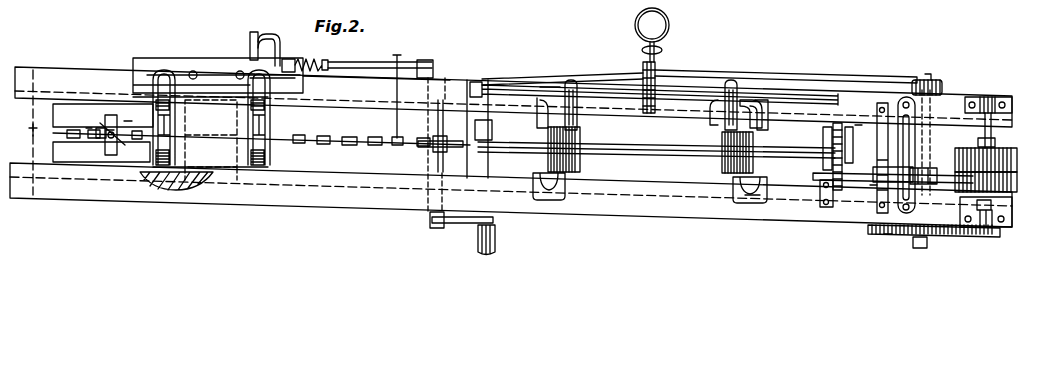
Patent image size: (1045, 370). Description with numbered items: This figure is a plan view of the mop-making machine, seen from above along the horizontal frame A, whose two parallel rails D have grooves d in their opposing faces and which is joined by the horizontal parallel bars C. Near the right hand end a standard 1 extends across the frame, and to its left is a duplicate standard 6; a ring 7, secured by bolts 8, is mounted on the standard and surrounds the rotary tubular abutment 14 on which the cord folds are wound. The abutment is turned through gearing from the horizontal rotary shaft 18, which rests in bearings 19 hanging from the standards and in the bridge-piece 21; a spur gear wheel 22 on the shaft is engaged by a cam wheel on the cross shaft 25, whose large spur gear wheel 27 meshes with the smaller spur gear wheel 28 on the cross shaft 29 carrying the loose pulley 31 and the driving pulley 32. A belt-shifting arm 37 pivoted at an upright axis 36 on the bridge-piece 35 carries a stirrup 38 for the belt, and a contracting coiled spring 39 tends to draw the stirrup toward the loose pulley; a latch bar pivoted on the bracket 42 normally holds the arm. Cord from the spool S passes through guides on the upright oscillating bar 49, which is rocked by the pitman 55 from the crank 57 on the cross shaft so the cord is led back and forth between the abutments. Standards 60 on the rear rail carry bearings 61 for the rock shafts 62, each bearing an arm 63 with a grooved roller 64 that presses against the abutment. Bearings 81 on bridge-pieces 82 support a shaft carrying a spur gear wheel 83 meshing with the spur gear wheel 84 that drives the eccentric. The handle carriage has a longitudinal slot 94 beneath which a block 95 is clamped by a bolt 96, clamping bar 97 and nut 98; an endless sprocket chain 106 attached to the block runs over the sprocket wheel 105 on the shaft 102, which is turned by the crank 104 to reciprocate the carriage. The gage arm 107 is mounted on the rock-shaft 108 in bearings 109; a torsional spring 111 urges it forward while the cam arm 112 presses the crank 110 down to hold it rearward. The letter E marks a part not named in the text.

The standard 1 is at (752, 203).
The standard 6 is at (552, 192).
The ring 7 is at (733, 180).
The bolts 8 is at (830, 145).
The rotary tubular abutment 14 is at (578, 162).
The horizontal rotary shaft 18 is at (612, 153).
The bearings 19 is at (542, 143).
The bridge-piece 21 is at (903, 97).
The spur gear wheel 22 is at (957, 127).
The cross shaft 25 is at (930, 185).
The spur gear wheel 27 is at (893, 236).
The spur gear wheel 28 is at (981, 236).
The cross shaft 29 is at (1012, 201).
The loose pulley 31 is at (1017, 162).
The driving pulley 32 is at (1017, 182).
The bridge-piece 35 is at (876, 185).
The upright axis 36 is at (871, 190).
The arm 37 is at (887, 240).
The stirrup 38 is at (948, 232).
The contracting coiled spring 39 is at (937, 127).
The bracket 42 is at (840, 200).
The upright oscillating bar 49 is at (644, 70).
The pitman 55 is at (757, 100).
The crank 57 is at (930, 79).
The standard 60 is at (480, 79).
The bearing 61 is at (490, 88).
The rock shaft 62 is at (540, 82).
The arm 63 is at (728, 100).
The grooved roller 64 is at (735, 100).
The bearings 81 is at (475, 130).
The bridge-pieces 82 is at (481, 165).
The spur gear wheel 83 is at (843, 148).
The spur gear wheel 84 is at (857, 127).
The longitudinal slot 94 is at (88, 130).
The block 95 is at (128, 123).
The bolt 96 is at (111, 140).
The clamping bar 97 is at (118, 148).
The nut 98 is at (110, 132).
The shaft 102 is at (436, 154).
The crank 104 is at (463, 226).
The sprocket wheel 105 is at (435, 142).
The endless sprocket chain 106 is at (300, 143).
The gage arm 107 is at (430, 91).
The rock-shaft 108 is at (368, 62).
The bearings 109 is at (290, 58).
The crank 110 is at (276, 36).
The torsional spring 111 is at (312, 60).
The cam arm 112 is at (250, 42).
The horizontal frame A is at (511, 147).
The horizontal parallel bars C is at (201, 125).
The rails D is at (458, 90).
The end box E is at (85, 150).
The spool of cord S is at (652, 35).
The groove d is at (208, 178).